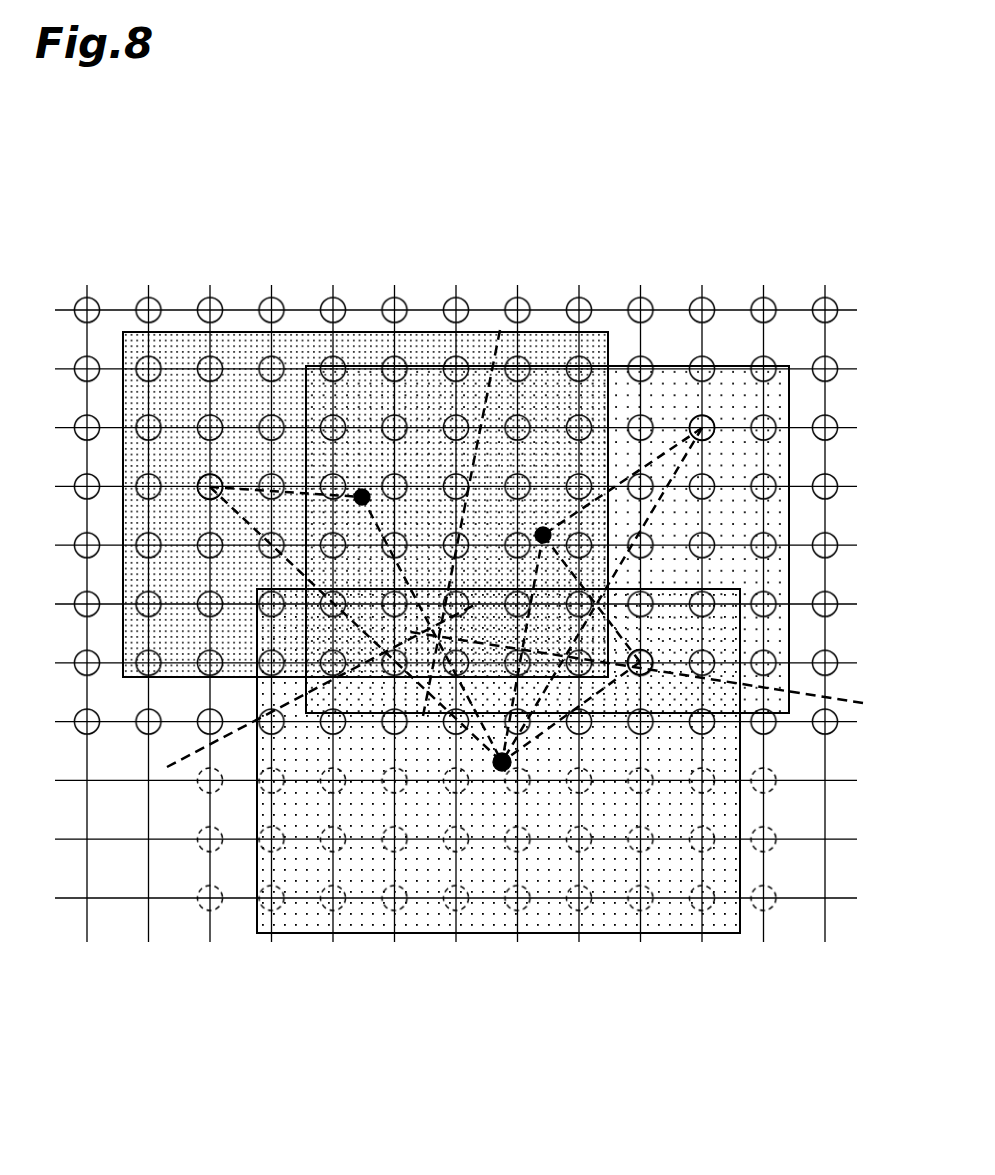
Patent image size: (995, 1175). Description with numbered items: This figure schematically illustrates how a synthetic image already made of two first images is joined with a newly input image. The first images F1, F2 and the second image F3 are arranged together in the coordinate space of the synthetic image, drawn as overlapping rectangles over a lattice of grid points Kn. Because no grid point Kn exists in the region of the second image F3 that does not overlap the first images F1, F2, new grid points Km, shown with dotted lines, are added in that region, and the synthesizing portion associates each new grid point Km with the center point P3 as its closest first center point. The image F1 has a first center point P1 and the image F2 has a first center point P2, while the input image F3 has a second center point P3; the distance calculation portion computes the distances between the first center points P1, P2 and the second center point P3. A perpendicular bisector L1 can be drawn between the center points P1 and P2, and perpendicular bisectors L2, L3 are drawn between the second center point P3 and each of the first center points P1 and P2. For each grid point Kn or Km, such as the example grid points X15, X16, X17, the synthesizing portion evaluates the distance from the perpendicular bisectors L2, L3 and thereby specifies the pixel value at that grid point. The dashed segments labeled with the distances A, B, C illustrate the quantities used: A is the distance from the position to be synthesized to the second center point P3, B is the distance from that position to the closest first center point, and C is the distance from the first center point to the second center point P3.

The grid point Kn is at (93, 300).
The newly added grid point Km is at (318, 909).
The first image F1 is at (533, 331).
The first image F2 is at (731, 366).
The second image F3 is at (663, 934).
The perpendicular bisector L1 is at (486, 340).
The perpendicular bisector L2 is at (187, 773).
The perpendicular bisector L3 is at (848, 704).
The grid point X15 is at (705, 424).
The grid point X16 is at (645, 666).
The grid point X17 is at (203, 484).
The first center point P1 is at (362, 489).
The first center point P2 is at (543, 527).
The second center point P3 is at (500, 773).
The distance from the predetermined position to the second center point A is at (456, 595).
The distance from the predetermined position to the closest first center point B is at (456, 545).
The distance from the first center point to the second center point C is at (456, 629).